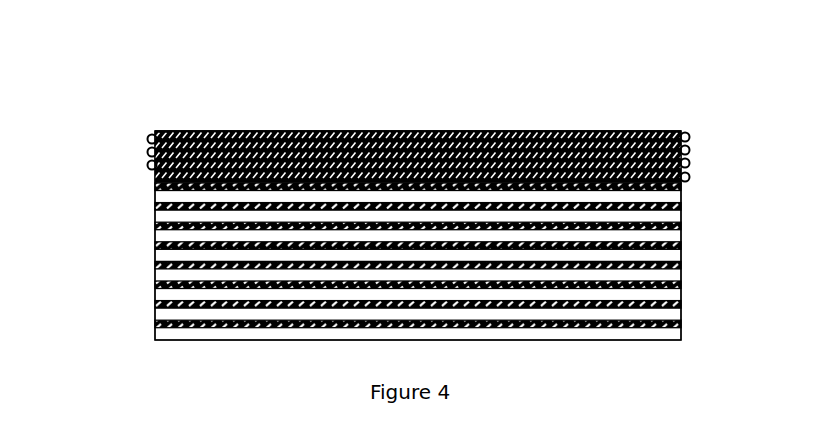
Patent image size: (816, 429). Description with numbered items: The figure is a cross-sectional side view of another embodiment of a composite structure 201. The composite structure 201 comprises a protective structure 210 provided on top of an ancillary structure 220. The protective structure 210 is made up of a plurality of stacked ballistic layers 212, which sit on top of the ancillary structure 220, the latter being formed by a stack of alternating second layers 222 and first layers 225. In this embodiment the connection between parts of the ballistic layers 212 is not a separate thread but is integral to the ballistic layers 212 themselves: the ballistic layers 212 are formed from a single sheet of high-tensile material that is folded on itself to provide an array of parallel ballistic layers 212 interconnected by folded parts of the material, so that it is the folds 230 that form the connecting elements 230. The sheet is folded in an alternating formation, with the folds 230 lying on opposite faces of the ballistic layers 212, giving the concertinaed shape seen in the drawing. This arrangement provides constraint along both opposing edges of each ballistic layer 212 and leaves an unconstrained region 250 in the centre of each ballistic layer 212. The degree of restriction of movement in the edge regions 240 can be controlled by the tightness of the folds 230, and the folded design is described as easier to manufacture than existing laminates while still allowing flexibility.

The composite structure 201 is at (127, 77).
The protective structure 210 is at (122, 131).
The ballistic layers 212 is at (449, 139).
The ancillary structure 220 is at (124, 185).
The second layers 222 is at (683, 187).
The first layers 225 is at (673, 254).
The folds 230 is at (149, 150).
The regions 240 is at (163, 133).
The unconstrained region 250 is at (380, 133).